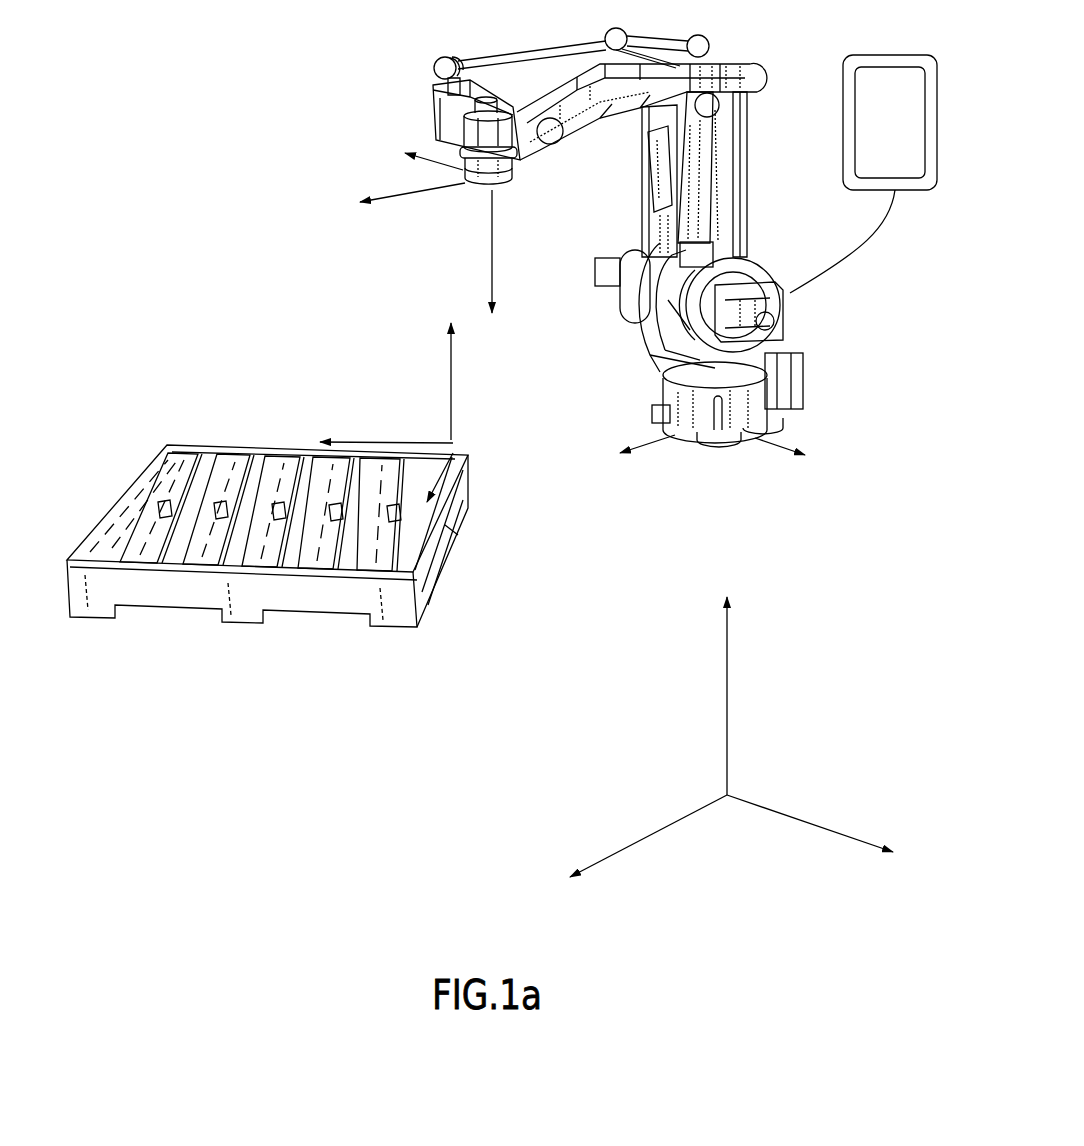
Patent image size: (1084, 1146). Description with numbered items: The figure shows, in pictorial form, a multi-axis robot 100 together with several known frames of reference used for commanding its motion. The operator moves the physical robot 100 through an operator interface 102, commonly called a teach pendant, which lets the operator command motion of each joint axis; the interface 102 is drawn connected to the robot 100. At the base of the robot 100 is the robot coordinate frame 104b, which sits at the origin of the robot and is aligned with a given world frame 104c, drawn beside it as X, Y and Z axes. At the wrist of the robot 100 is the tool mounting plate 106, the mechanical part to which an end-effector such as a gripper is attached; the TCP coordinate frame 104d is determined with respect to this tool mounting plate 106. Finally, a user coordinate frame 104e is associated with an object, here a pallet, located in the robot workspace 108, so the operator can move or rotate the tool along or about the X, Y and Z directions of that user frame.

The multi-axis robot 100 is at (803, 393).
The operator interface 102 is at (913, 190).
The robot coordinate frame 104b is at (707, 508).
The world frame 104c is at (722, 877).
The TCP coordinate frame 104d is at (328, 217).
The user coordinate frame 104e is at (282, 407).
The tool mounting plate 106 is at (500, 170).
The robot workspace 108 is at (253, 693).